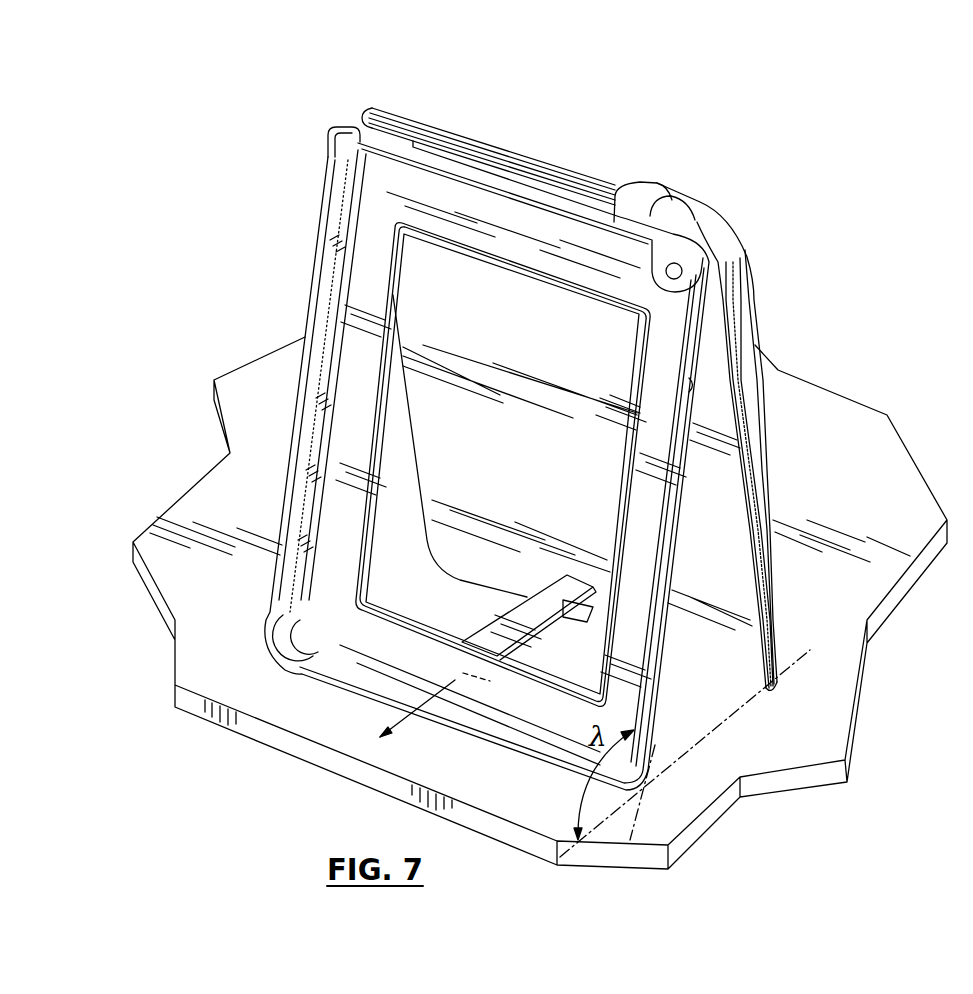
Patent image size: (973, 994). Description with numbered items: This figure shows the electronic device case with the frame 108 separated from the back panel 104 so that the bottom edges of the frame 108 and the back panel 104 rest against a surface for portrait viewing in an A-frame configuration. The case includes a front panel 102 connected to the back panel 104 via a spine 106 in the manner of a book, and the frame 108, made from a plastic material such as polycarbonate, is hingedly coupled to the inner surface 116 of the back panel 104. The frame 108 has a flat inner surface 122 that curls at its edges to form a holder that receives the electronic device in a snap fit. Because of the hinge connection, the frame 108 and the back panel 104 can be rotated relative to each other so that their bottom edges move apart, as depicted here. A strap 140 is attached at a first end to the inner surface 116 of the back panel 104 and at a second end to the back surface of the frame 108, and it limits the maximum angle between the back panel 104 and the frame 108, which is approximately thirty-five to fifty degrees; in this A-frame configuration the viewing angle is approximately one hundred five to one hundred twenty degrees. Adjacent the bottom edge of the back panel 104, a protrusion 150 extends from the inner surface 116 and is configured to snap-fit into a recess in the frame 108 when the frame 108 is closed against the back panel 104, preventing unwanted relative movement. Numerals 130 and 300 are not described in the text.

The front panel 102 is at (500, 157).
The back panel 104 is at (417, 141).
The spine 106 is at (362, 104).
The frame 108 is at (312, 297).
The inner surface 116 is at (573, 479).
The flat inner surface 122 is at (357, 663).
The hinge 130 is at (663, 187).
The strap 140 is at (540, 618).
The protrusion 150 is at (587, 620).
The base 300 is at (357, 745).